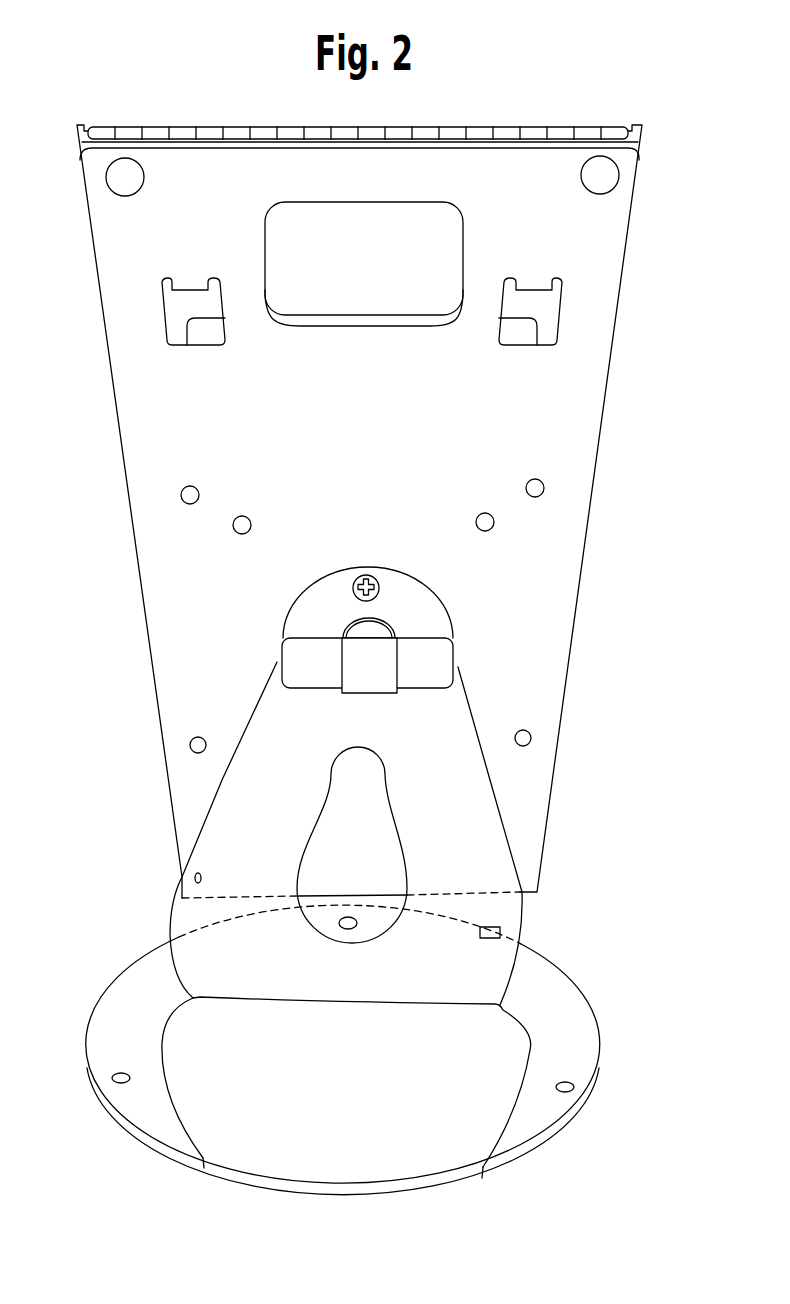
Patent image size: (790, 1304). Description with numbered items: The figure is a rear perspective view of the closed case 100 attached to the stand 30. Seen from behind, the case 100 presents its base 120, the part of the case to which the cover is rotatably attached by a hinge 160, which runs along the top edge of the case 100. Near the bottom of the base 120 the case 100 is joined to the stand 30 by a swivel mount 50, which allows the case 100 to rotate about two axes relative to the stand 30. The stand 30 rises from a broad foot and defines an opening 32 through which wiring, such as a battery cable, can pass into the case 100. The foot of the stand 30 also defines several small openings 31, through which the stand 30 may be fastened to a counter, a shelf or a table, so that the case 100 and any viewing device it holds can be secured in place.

The case 100 is at (624, 267).
The base 120 is at (568, 483).
The hinge 160 is at (514, 128).
The swivel mount 50 is at (448, 636).
The opening 32 is at (393, 828).
The small openings 31 is at (350, 921).
The stand 30 is at (593, 1018).